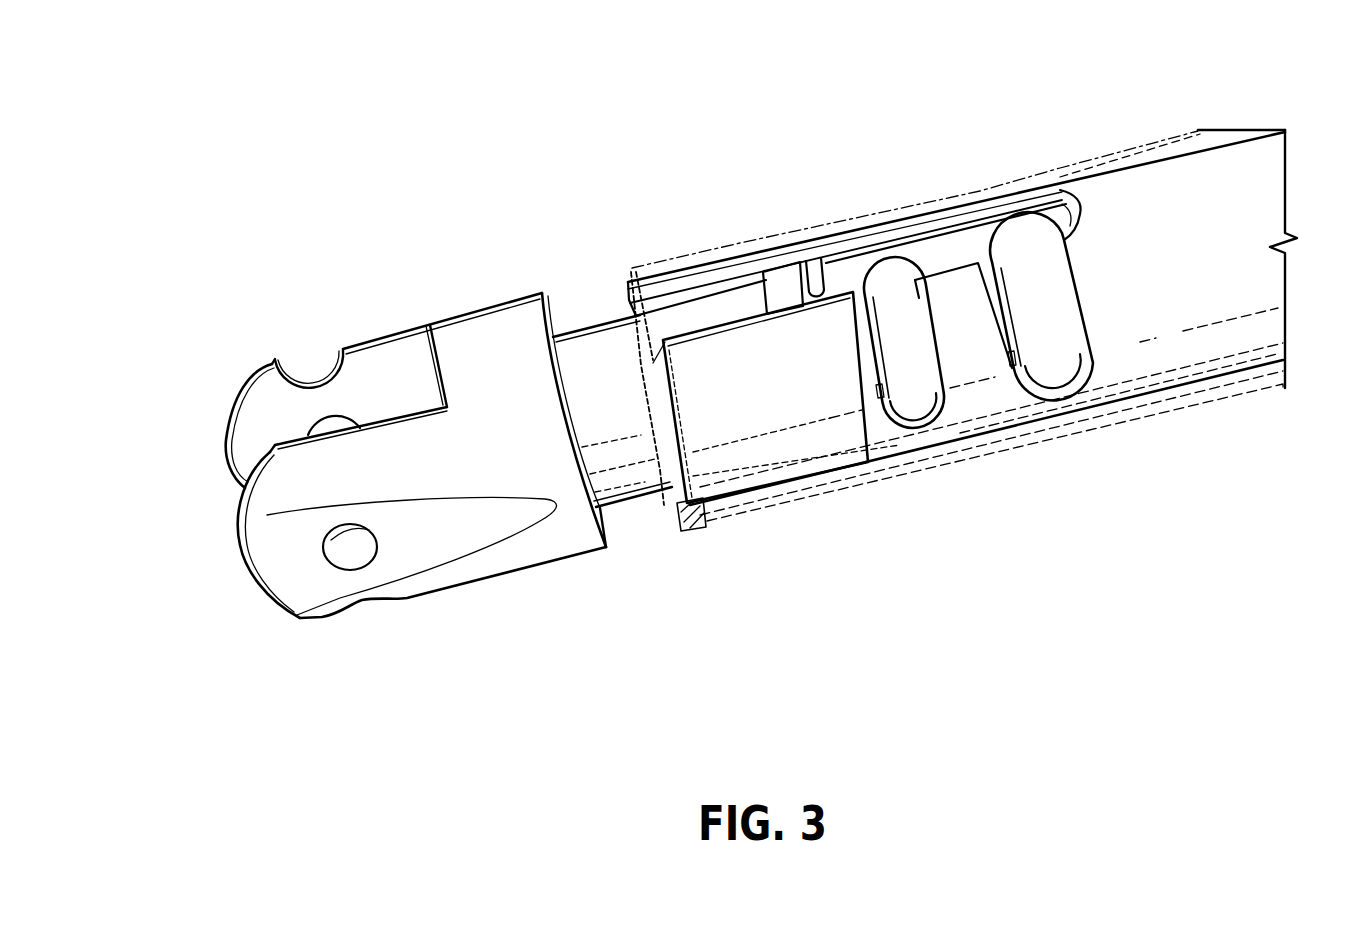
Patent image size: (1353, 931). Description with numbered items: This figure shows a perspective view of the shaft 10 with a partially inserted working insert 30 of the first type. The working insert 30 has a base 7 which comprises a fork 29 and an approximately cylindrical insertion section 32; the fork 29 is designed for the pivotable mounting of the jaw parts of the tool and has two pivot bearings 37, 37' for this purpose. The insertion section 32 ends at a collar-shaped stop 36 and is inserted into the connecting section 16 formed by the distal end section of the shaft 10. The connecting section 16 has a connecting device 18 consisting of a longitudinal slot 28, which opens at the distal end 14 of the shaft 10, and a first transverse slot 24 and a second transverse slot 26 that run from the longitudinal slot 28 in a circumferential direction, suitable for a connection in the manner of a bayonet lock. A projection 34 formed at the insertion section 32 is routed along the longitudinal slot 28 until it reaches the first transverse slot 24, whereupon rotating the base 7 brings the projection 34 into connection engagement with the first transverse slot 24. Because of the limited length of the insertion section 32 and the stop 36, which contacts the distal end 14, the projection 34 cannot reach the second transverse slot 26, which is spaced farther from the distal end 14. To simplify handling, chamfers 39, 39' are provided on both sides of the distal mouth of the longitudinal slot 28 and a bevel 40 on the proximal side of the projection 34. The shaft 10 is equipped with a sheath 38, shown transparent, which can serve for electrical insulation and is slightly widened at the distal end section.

The shaft 10 is at (1073, 127).
The base 7 is at (497, 243).
The working insert 30 is at (250, 305).
The fork 29 is at (497, 578).
The pivot bearing 37 is at (350, 612).
The pivot bearing 37' is at (345, 355).
The insertion section 32 is at (585, 350).
The collar-shaped stop 36 is at (610, 527).
The chamfer 39 is at (622, 282).
The chamfer 39' is at (645, 321).
The distal end 14 is at (672, 507).
The sheath 38 is at (682, 270).
The projection 34 is at (787, 293).
The bevel 40 is at (807, 277).
The longitudinal slot 28 is at (850, 283).
The first transverse slot 24 is at (889, 352).
The second transverse slot 26 is at (1024, 314).
The connecting device 18 is at (913, 388).
The connecting section 16 is at (812, 523).